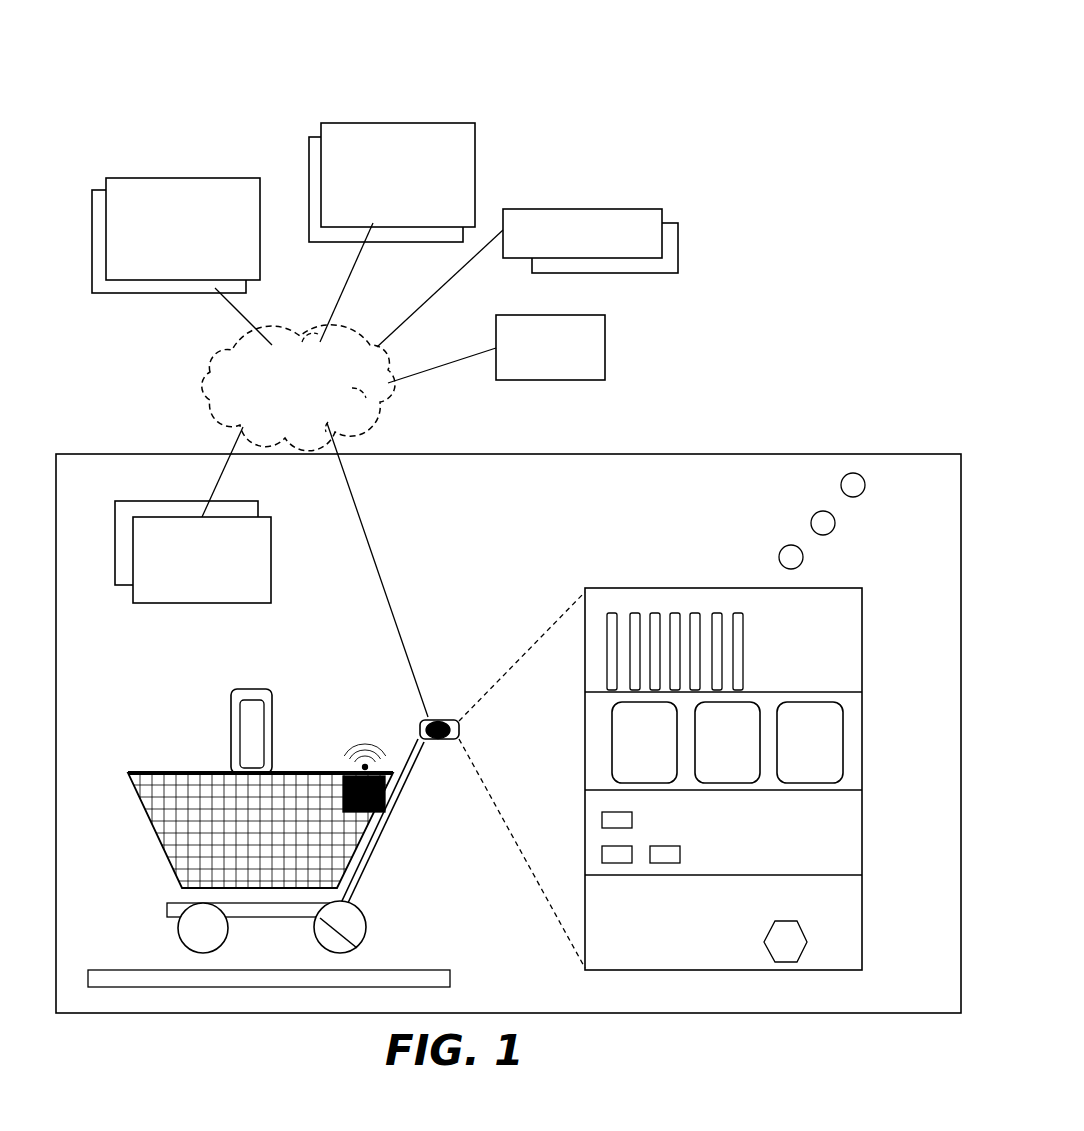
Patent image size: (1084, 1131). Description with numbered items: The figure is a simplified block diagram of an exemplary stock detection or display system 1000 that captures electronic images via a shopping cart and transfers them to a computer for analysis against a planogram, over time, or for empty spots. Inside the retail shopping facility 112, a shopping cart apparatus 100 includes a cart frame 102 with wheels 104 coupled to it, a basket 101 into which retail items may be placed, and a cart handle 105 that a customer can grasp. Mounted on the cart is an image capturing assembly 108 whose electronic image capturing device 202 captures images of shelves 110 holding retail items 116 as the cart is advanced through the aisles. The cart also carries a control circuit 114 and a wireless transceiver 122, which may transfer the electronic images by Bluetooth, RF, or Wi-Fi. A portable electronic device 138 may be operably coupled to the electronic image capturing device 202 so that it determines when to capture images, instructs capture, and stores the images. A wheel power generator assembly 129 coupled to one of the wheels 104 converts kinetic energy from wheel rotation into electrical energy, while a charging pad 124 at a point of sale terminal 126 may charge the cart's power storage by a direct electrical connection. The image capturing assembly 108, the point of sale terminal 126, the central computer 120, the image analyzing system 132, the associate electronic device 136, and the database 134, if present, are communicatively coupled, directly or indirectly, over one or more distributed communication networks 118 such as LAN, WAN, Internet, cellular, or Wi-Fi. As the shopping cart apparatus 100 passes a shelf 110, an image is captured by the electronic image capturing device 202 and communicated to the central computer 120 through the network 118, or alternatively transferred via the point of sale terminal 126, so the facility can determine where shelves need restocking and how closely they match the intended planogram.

The stock detection or display system 1000 is at (745, 120).
The shopping cart apparatus 100 is at (269, 808).
The basket 101 is at (163, 843).
The cart frame 102 is at (372, 840).
The wheels 104 is at (183, 932).
The wheel power generator assembly 129 is at (365, 928).
The portable electronic device 138 is at (238, 737).
The control circuit 114 is at (342, 772).
The wireless transceiver 122 is at (367, 752).
The image capturing assembly 108 is at (465, 780).
The electronic image capturing device 202 is at (435, 720).
The cart handle 105 is at (459, 728).
The shelves 110 is at (759, 779).
The retail items 116 is at (820, 755).
The retail shopping facility 112 is at (826, 454).
The charging pad 124 is at (128, 972).
The distributed communication networks 118 is at (208, 383).
The central computer 120 is at (601, 333).
The point of sale terminal(s) 126 is at (150, 515).
The image analyzing system 132 is at (170, 177).
The database(s) 134 is at (662, 213).
The associate electronic device(s) 136 is at (320, 180).